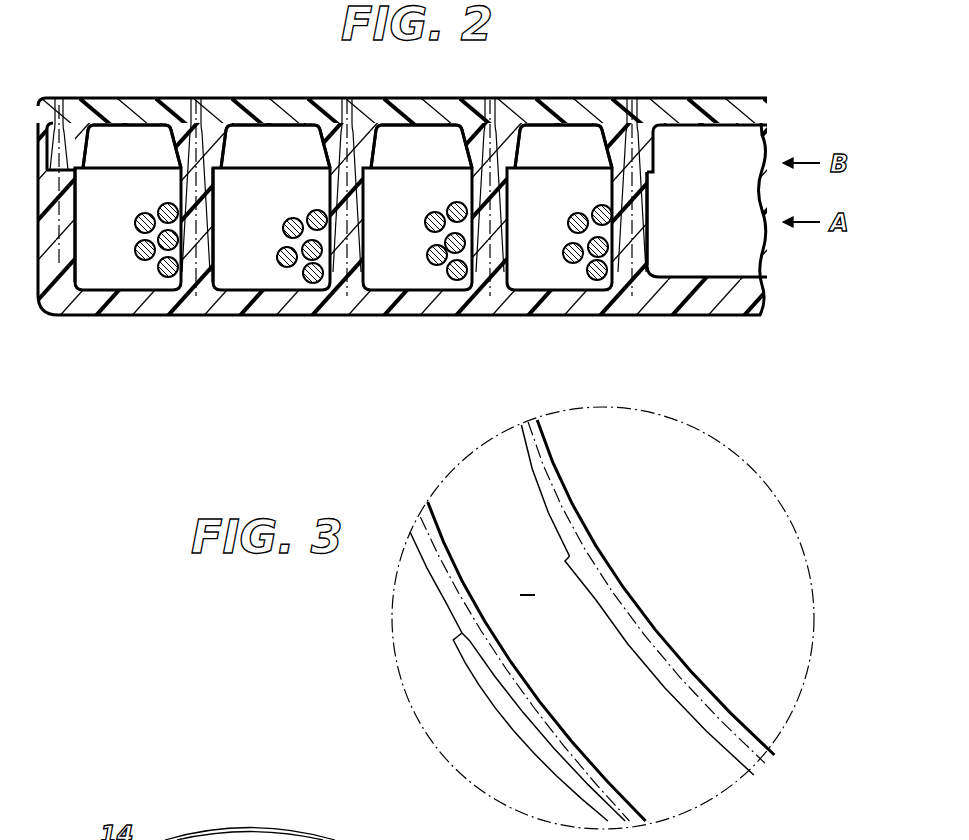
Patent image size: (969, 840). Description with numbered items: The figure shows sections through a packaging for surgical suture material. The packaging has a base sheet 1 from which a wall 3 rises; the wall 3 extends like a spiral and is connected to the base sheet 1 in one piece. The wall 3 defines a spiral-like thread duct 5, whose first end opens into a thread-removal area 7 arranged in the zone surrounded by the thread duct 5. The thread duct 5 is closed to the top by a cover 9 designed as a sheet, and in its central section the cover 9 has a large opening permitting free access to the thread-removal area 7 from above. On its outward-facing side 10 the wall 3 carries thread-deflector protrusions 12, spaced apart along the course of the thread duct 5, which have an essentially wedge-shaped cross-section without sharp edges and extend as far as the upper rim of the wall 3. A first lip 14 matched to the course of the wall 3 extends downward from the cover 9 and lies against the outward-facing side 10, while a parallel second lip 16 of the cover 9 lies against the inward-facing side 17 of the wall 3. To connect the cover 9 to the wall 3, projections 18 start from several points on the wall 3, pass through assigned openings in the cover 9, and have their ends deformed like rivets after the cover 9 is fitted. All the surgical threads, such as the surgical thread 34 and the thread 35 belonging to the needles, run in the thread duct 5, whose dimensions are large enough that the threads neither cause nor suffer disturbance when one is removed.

In FIG. 2, the base sheet 1 is at (707, 305).
In FIG. 2, the wall 3 is at (72, 217).
In FIG. 3, the wall 3 is at (700, 678).
In FIG. 2, the thread duct 5 is at (113, 269).
In FIG. 3, the thread duct 5 is at (526, 582).
In FIG. 2, the thread-removal area 7 is at (721, 261).
In FIG. 2, the cover 9 is at (555, 105).
In FIG. 2, the outward-facing side 10 is at (327, 173).
In FIG. 3, the outward-facing side 10 is at (532, 480).
In FIG. 2, the thread-deflector protrusions 12 is at (473, 153).
In FIG. 3, the thread-deflector protrusions 12 is at (617, 635).
In FIG. 2, the first lip 14 is at (177, 148).
In FIG. 2, the second lip 16 is at (520, 158).
In FIG. 3, the inward-facing side 17 is at (570, 502).
In FIG. 2, the projections 18 is at (190, 100).
In FIG. 2, the surgical thread 34 is at (428, 266).
In FIG. 2, the thread 35 is at (452, 276).